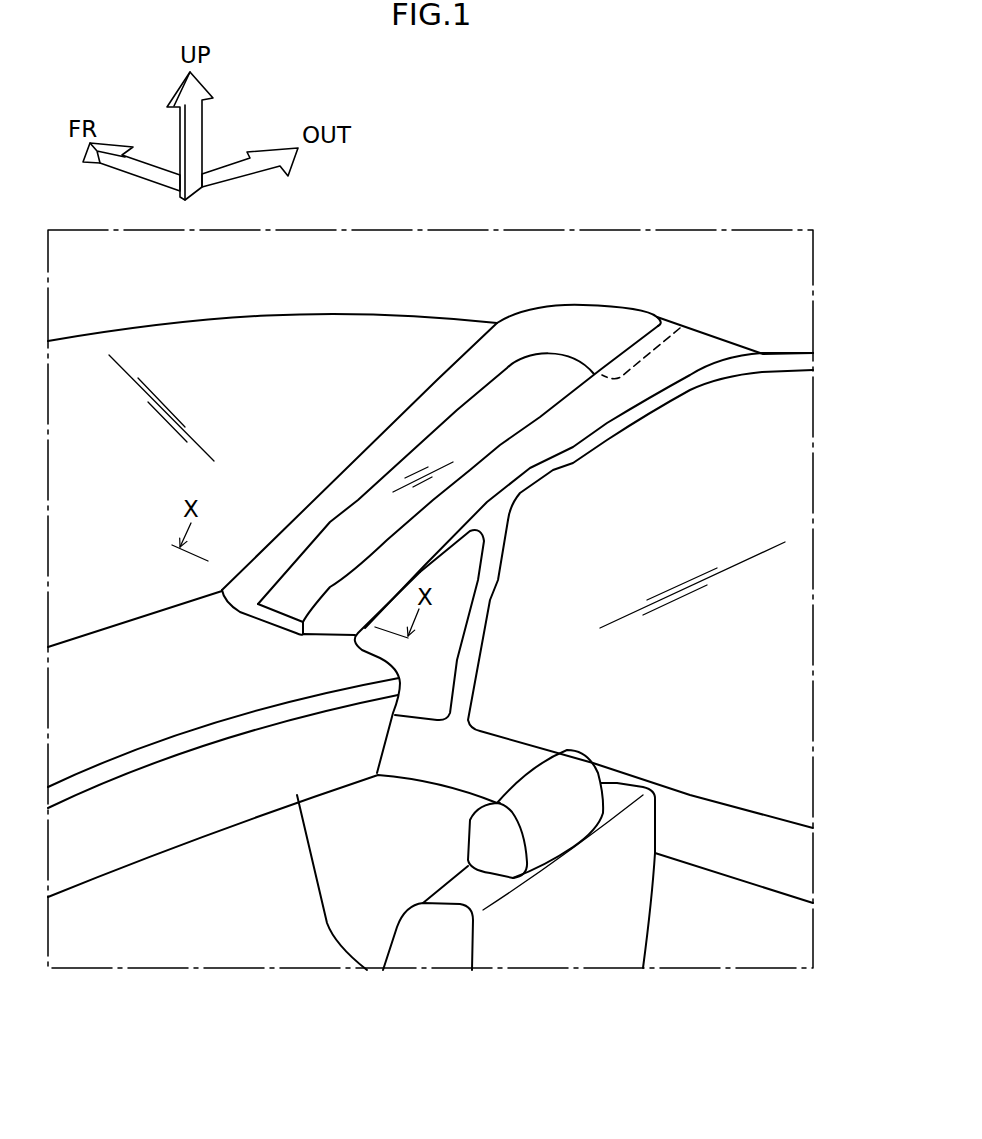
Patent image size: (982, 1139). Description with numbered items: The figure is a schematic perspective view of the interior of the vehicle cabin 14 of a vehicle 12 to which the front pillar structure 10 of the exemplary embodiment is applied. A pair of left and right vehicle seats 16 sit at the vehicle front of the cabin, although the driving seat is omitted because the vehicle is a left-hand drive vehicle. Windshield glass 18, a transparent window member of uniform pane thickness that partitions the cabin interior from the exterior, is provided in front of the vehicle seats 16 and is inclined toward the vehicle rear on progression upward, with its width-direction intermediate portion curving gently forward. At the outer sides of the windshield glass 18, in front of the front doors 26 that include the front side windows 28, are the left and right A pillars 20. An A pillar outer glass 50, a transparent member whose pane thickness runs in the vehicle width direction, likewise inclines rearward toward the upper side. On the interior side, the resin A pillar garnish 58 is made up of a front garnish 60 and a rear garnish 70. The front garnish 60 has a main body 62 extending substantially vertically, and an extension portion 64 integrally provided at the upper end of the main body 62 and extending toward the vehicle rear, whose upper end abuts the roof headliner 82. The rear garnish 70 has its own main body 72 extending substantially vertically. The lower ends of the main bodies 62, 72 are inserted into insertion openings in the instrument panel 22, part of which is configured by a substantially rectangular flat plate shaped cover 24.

The front pillar structure 10 is at (247, 625).
The vehicle 12 is at (668, 266).
The vehicle cabin 14 is at (244, 885).
The vehicle seat 16 is at (660, 817).
The windshield glass 18 is at (86, 588).
The front pillar (A pillar) 20 is at (514, 414).
The instrument panel 22 is at (130, 722).
The cover 24 is at (277, 622).
The front door 26 is at (793, 857).
The front side window 28 is at (767, 633).
The A pillar outer glass 50 is at (495, 422).
The A pillar garnish 58 is at (514, 391).
The front garnish 60 is at (438, 391).
The main body 62 is at (410, 427).
The extension portion 64 is at (594, 321).
The rear garnish 70 is at (484, 508).
The main body 72 is at (578, 419).
The roof headliner 82 is at (502, 255).